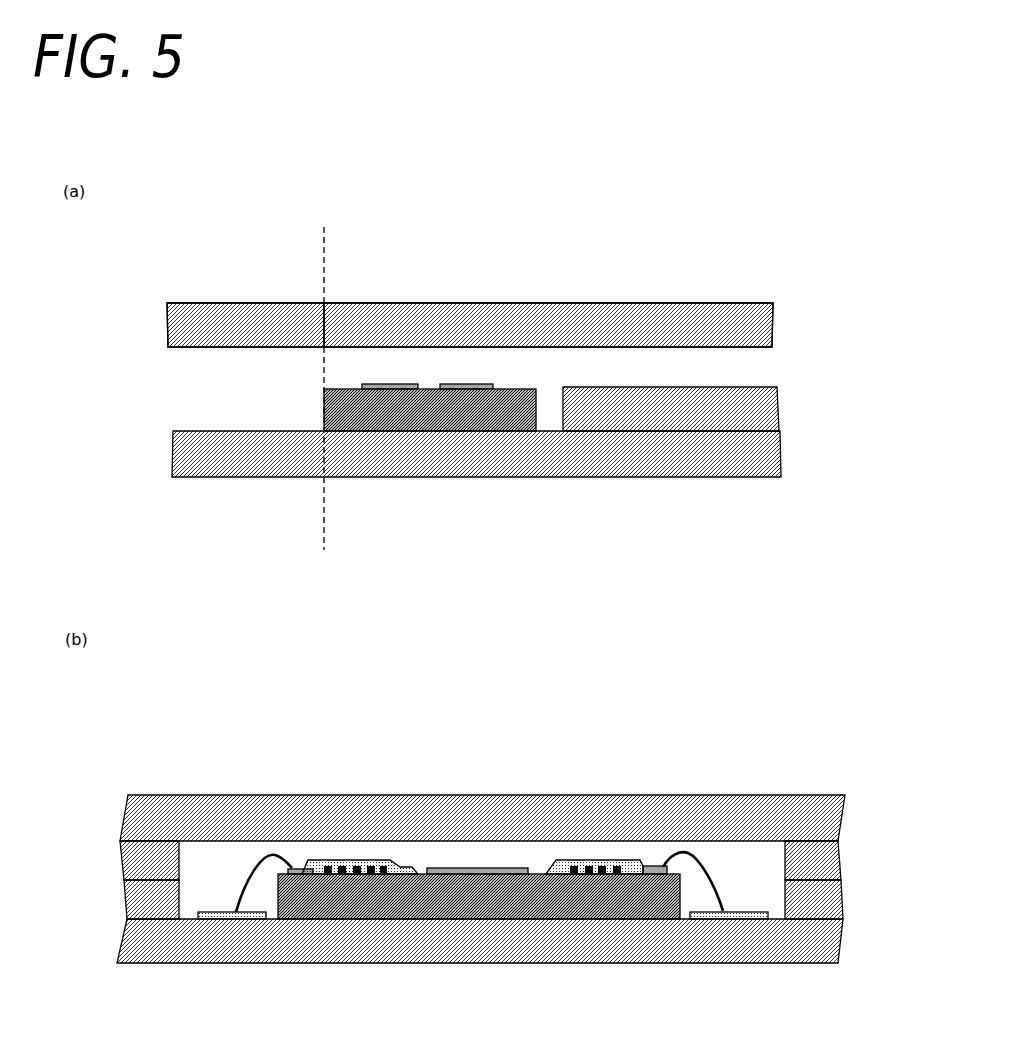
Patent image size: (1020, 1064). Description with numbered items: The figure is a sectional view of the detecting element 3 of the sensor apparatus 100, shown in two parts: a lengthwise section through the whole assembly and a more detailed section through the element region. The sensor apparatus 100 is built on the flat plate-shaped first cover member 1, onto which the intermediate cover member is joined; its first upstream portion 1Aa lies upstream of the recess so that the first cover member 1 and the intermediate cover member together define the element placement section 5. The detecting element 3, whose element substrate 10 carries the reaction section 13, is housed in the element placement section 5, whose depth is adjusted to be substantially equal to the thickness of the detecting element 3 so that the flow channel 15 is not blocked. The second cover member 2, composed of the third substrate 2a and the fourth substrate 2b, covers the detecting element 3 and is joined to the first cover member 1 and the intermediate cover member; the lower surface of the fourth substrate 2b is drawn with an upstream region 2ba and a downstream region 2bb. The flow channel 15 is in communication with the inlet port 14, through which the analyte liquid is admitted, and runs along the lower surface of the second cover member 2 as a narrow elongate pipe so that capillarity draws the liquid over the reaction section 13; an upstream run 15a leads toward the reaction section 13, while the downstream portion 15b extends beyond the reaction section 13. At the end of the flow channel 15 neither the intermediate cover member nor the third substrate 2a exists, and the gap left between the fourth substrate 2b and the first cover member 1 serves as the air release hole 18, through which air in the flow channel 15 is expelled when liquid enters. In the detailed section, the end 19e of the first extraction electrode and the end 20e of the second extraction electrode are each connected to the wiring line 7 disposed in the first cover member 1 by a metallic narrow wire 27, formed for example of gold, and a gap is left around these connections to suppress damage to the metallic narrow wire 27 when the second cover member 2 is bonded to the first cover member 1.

The sensor apparatus 100 is at (765, 210).
The first cover member 1 is at (200, 455).
The first upstream portion 1Aa is at (755, 412).
The second cover member 2 is at (55, 812).
The third substrate 2a is at (148, 854).
The fourth substrate 2b is at (200, 320).
The lid plate first region 2ba is at (640, 327).
The lid plate second region 2bb is at (280, 325).
The detecting element 3 is at (512, 517).
The element placement section 5 is at (562, 402).
The wiring line 7 is at (235, 913).
The element substrate 10 is at (433, 417).
The reaction section 13 is at (387, 389).
The inlet port 14 is at (788, 360).
The flow channel 15 is at (478, 848).
The first inner surface 15a is at (645, 363).
The downstream portion (extension) 15b is at (272, 362).
The air release hole 18 is at (173, 368).
The end of the first extraction electrode 19e is at (657, 875).
The end of the second extraction electrode 20e is at (300, 875).
The metallic narrow wire 27 is at (248, 867).